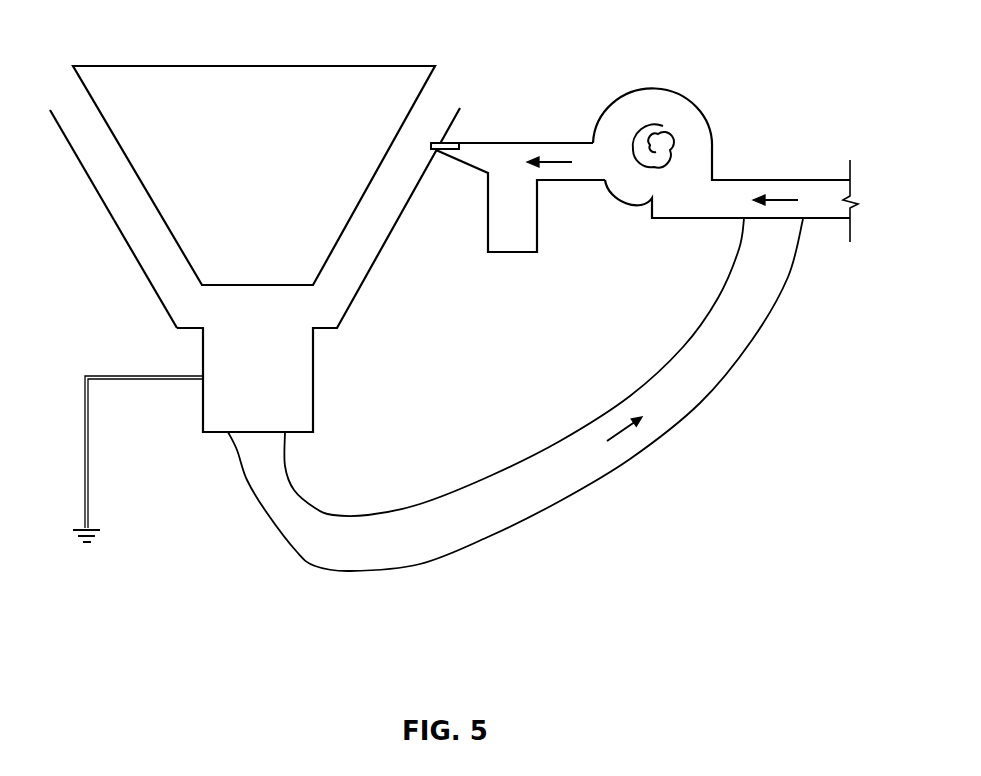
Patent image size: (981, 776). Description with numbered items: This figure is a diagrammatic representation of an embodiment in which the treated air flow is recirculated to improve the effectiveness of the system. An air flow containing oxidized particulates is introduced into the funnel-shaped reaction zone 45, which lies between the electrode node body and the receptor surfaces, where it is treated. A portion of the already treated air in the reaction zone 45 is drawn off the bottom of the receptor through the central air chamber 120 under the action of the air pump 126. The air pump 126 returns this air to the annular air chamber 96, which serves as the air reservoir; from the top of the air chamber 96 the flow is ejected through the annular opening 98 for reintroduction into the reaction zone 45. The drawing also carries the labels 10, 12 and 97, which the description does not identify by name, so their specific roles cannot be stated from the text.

The hopper 10 is at (222, 77).
The hopper wall 12 is at (110, 213).
The funnel-shaped reaction zone 45 is at (152, 260).
The annular air chamber 96 is at (500, 232).
The blower 97 is at (582, 152).
The annular opening 98 is at (455, 143).
The central air chamber 120 is at (213, 397).
The air pump 126 is at (504, 520).